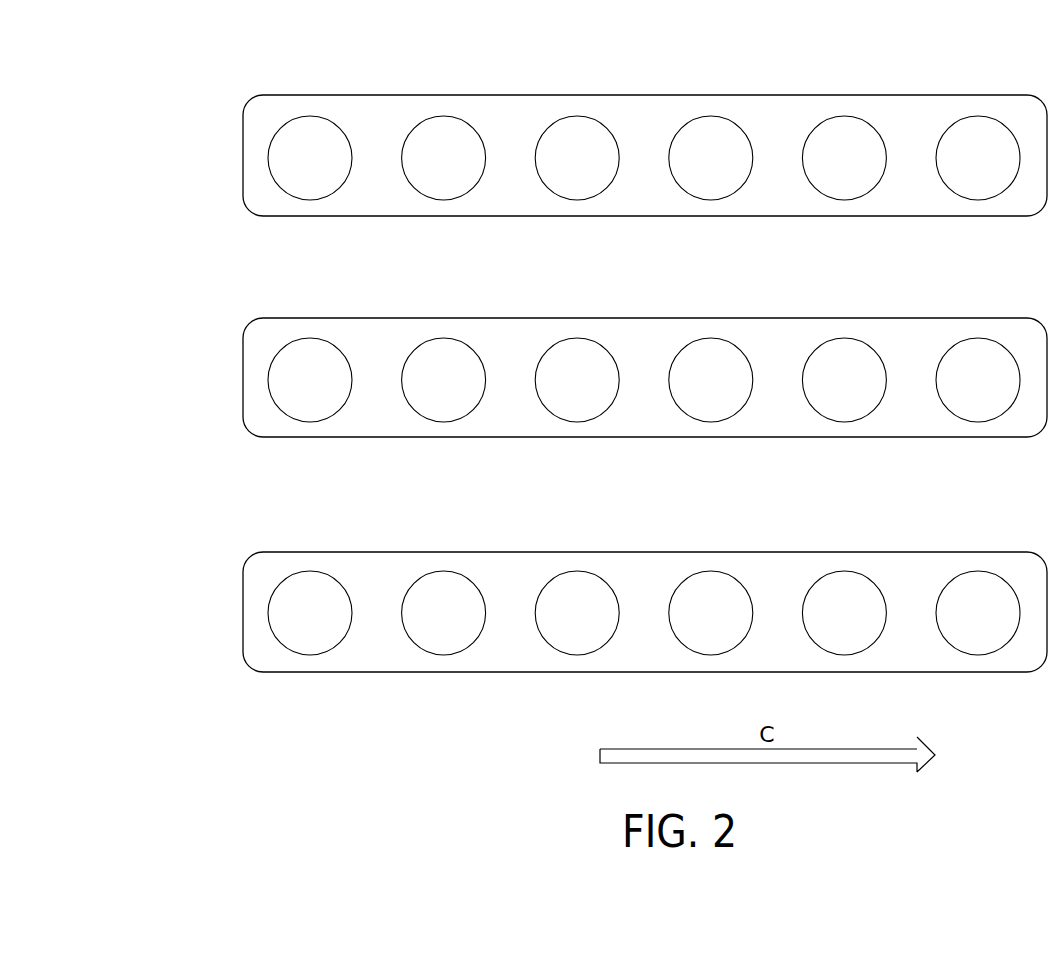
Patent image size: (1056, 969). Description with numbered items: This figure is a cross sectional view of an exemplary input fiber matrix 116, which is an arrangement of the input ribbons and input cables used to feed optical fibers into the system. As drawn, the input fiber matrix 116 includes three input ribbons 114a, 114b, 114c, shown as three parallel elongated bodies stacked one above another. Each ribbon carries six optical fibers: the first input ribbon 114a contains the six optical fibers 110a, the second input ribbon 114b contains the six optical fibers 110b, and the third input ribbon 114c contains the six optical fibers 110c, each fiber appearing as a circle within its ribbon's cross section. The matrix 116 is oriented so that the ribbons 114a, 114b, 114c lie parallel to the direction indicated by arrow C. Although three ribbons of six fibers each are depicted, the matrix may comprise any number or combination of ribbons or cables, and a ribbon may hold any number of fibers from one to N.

The input fiber matrix 116 is at (222, 26).
The input ribbon 114a is at (243, 158).
The input ribbon 114b is at (243, 382).
The input ribbon 114c is at (243, 628).
The optical fibers 110a is at (644, 158).
The optical fibers 110b is at (644, 380).
The optical fibers 110c is at (644, 613).